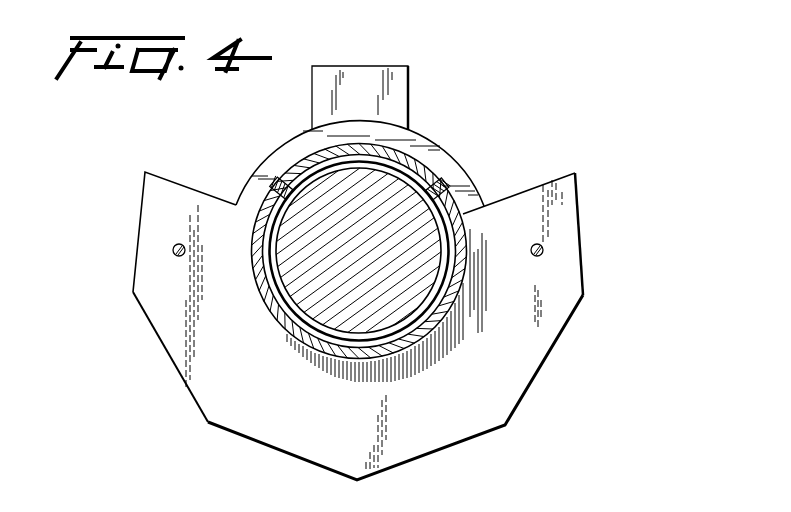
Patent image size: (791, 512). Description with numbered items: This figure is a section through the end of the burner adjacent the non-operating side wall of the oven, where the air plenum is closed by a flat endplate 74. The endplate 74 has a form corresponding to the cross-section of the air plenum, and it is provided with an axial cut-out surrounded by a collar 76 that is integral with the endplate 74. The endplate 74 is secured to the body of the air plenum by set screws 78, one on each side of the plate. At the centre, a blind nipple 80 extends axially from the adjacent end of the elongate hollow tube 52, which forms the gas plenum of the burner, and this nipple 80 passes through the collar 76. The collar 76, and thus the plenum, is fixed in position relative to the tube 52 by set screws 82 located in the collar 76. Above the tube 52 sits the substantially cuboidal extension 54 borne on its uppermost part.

The elongate hollow tube 52 is at (440, 147).
The cuboidal extension 54 is at (408, 83).
The endplate 74 is at (424, 408).
The collar 76 is at (310, 155).
The set screws 78 is at (173, 251).
The blind nipple 80 is at (290, 305).
The set screws 82 is at (270, 185).